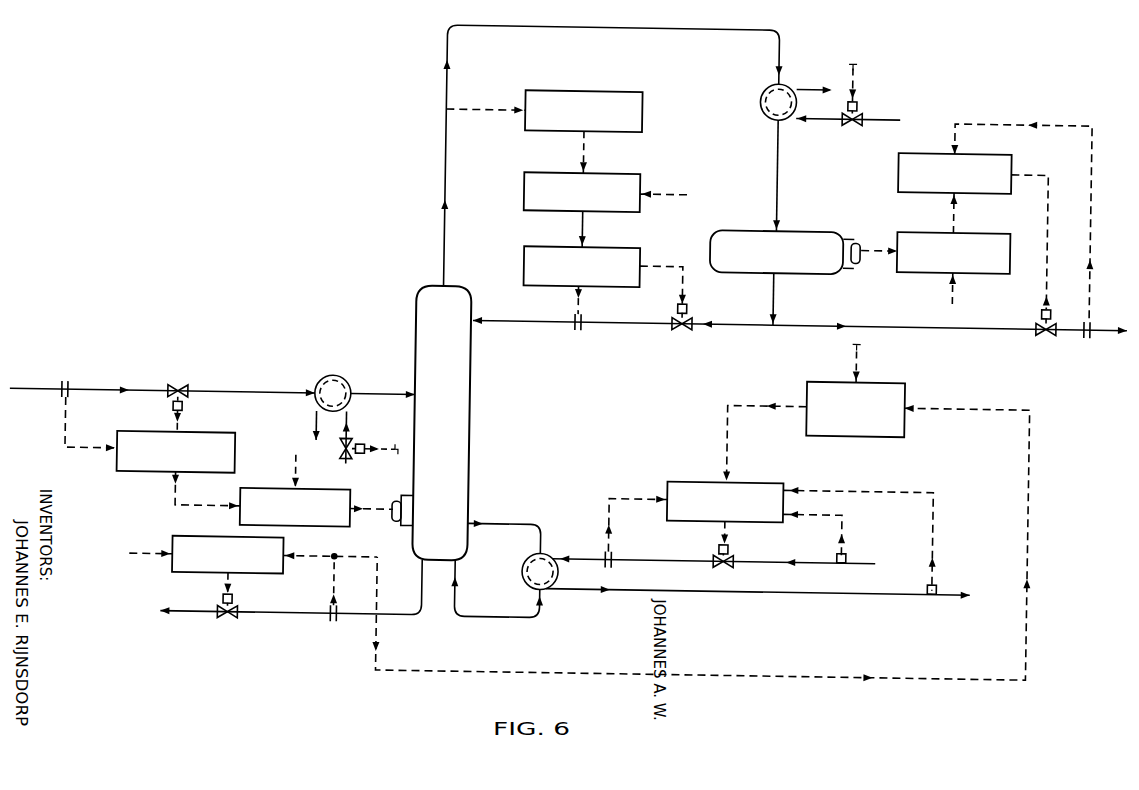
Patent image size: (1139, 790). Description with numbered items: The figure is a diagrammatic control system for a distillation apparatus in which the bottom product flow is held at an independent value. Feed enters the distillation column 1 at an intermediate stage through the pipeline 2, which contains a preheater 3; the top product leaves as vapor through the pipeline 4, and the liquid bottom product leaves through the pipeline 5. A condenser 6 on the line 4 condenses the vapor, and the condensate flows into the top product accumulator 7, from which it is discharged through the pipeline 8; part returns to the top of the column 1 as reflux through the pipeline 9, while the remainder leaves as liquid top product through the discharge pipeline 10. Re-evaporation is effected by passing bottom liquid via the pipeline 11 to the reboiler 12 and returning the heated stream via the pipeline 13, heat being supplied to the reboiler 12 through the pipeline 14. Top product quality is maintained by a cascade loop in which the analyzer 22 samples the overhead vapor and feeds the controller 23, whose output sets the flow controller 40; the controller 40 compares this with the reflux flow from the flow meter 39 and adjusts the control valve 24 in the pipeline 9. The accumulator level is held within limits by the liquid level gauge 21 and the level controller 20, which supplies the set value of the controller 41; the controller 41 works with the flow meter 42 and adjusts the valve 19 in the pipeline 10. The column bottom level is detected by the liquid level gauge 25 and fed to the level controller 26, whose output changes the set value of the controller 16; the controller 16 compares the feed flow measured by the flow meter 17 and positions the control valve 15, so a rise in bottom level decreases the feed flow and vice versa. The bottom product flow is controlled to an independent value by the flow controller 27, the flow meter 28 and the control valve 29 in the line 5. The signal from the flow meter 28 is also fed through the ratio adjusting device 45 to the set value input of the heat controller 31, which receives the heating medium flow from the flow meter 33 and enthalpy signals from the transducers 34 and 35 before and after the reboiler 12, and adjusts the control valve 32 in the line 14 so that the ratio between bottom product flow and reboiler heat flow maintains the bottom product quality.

The distillation column 1 is at (438, 421).
The feed pipeline 2 is at (367, 395).
The preheater 3 is at (340, 378).
The top product discharge pipeline 4 is at (672, 25).
The bottom product pipeline 5 is at (406, 617).
The condenser 6 is at (760, 88).
The top product accumulator 7 is at (806, 226).
The accumulator discharge pipeline 8 is at (774, 304).
The reflux pipeline 9 is at (735, 322).
The top product discharge pipeline 10 is at (820, 320).
The reboiler feed pipeline 11 is at (486, 616).
The reboiler 12 is at (527, 560).
The reboiler return pipeline 13 is at (505, 523).
The heating medium pipeline 14 is at (703, 588).
The feed control valve 15 is at (178, 388).
The feed flow controller 16 is at (209, 436).
The feed flow meter 17 is at (50, 373).
The top product control valve 19 is at (1047, 326).
The accumulator level controller 20 is at (987, 225).
The accumulator liquid level gauge 21 is at (858, 239).
The analyzer 22 is at (612, 89).
The quality controller 23 is at (606, 171).
The reflux control valve 24 is at (684, 328).
The column bottom liquid level gauge 25 is at (386, 523).
The bottom level controller 26 is at (308, 491).
The bottom product flow controller 27 is at (264, 576).
The bottom product flow meter 28 is at (320, 635).
The bottom product control valve 29 is at (229, 621).
The heat controller 31 is at (752, 478).
The heating medium control valve 32 is at (727, 565).
The heating medium flow meter 33 is at (615, 563).
The transducer 34 is at (851, 556).
The transducer 35 is at (942, 585).
The reflux flow meter 39 is at (566, 304).
The reflux flow controller 40 is at (607, 245).
The top product flow controller 41 is at (990, 146).
The top product flow meter 42 is at (1091, 318).
The ratio adjusting device 45 is at (875, 376).